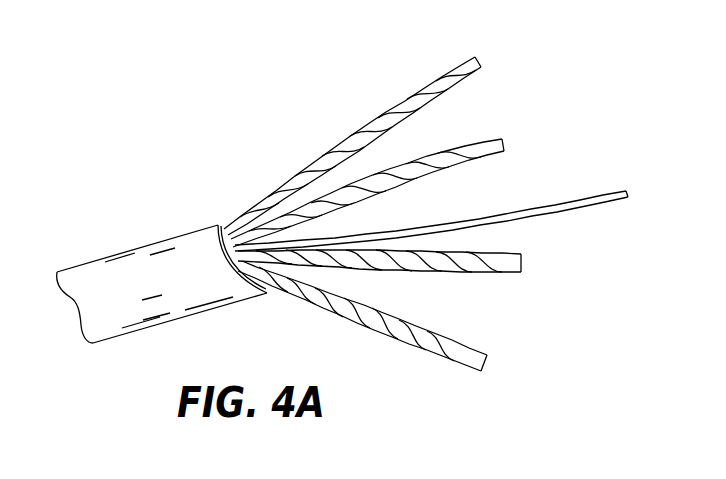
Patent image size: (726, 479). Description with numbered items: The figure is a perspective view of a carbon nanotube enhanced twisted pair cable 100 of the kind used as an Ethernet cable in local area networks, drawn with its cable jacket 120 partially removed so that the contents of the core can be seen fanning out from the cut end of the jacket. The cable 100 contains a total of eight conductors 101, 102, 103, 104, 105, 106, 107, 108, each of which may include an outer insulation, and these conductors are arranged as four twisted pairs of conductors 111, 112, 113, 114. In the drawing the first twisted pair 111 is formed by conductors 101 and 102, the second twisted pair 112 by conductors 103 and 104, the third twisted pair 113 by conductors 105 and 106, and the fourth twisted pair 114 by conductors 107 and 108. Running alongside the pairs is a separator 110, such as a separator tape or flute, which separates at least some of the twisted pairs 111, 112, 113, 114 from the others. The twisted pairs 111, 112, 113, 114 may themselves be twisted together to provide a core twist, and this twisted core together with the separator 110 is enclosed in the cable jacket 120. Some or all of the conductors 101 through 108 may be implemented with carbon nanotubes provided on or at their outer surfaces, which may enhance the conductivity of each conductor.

The twisted pair cable 100 is at (178, 187).
The cable jacket 120 is at (92, 270).
The conductor 101 is at (472, 57).
The conductor 102 is at (479, 62).
The conductor 103 is at (508, 138).
The conductor 104 is at (507, 144).
The conductor 105 is at (526, 257).
The conductor 106 is at (528, 270).
The conductor 107 is at (490, 362).
The conductor 108 is at (483, 373).
The separator 110 is at (612, 190).
The twisted pair 111 is at (497, 62).
The twisted pair 112 is at (533, 136).
The twisted pair 113 is at (563, 266).
The twisted pair 114 is at (537, 358).